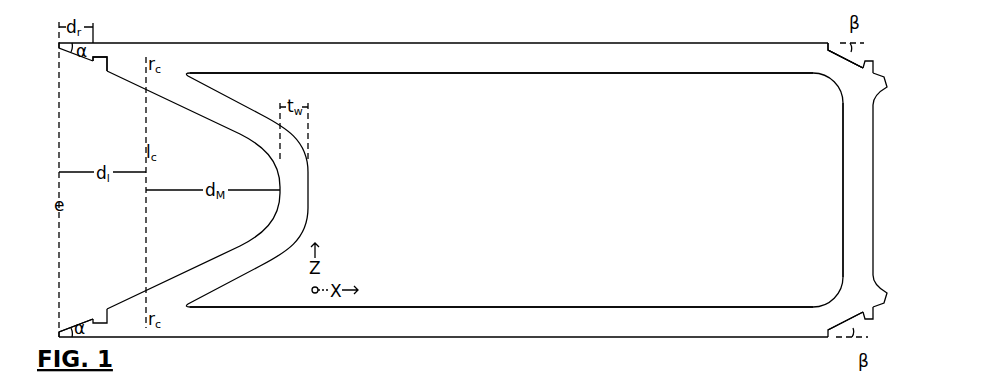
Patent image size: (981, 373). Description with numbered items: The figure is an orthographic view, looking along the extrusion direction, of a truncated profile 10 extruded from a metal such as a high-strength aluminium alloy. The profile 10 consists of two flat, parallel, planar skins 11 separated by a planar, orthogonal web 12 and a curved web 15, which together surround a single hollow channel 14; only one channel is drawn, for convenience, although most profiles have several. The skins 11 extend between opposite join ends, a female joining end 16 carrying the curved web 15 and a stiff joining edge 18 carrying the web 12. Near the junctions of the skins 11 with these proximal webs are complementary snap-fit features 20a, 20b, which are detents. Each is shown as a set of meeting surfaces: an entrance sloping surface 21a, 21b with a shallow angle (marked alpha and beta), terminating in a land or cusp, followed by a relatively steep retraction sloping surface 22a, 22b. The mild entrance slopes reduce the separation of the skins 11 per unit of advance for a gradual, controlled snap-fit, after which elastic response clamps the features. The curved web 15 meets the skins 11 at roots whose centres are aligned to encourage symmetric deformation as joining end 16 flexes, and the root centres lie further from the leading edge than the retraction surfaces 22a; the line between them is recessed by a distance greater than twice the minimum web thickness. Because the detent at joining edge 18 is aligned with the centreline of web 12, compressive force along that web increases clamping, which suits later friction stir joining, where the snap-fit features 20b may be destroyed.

The profile 10 is at (474, 186).
The skins 11 is at (420, 67).
The web 12 is at (870, 215).
The hollow channel 14 is at (546, 202).
The curved web 15 is at (309, 205).
The joining end 16 is at (54, 150).
The joining edge 18 is at (886, 160).
The snap-fit feature 20a is at (93, 66).
The snap-fit feature 20b is at (870, 63).
The entrance sloping surface 21a is at (81, 313).
The entrance sloping surface 21b is at (866, 56).
The retraction sloping surface 22a is at (100, 66).
The retraction sloping surface 22b is at (851, 63).